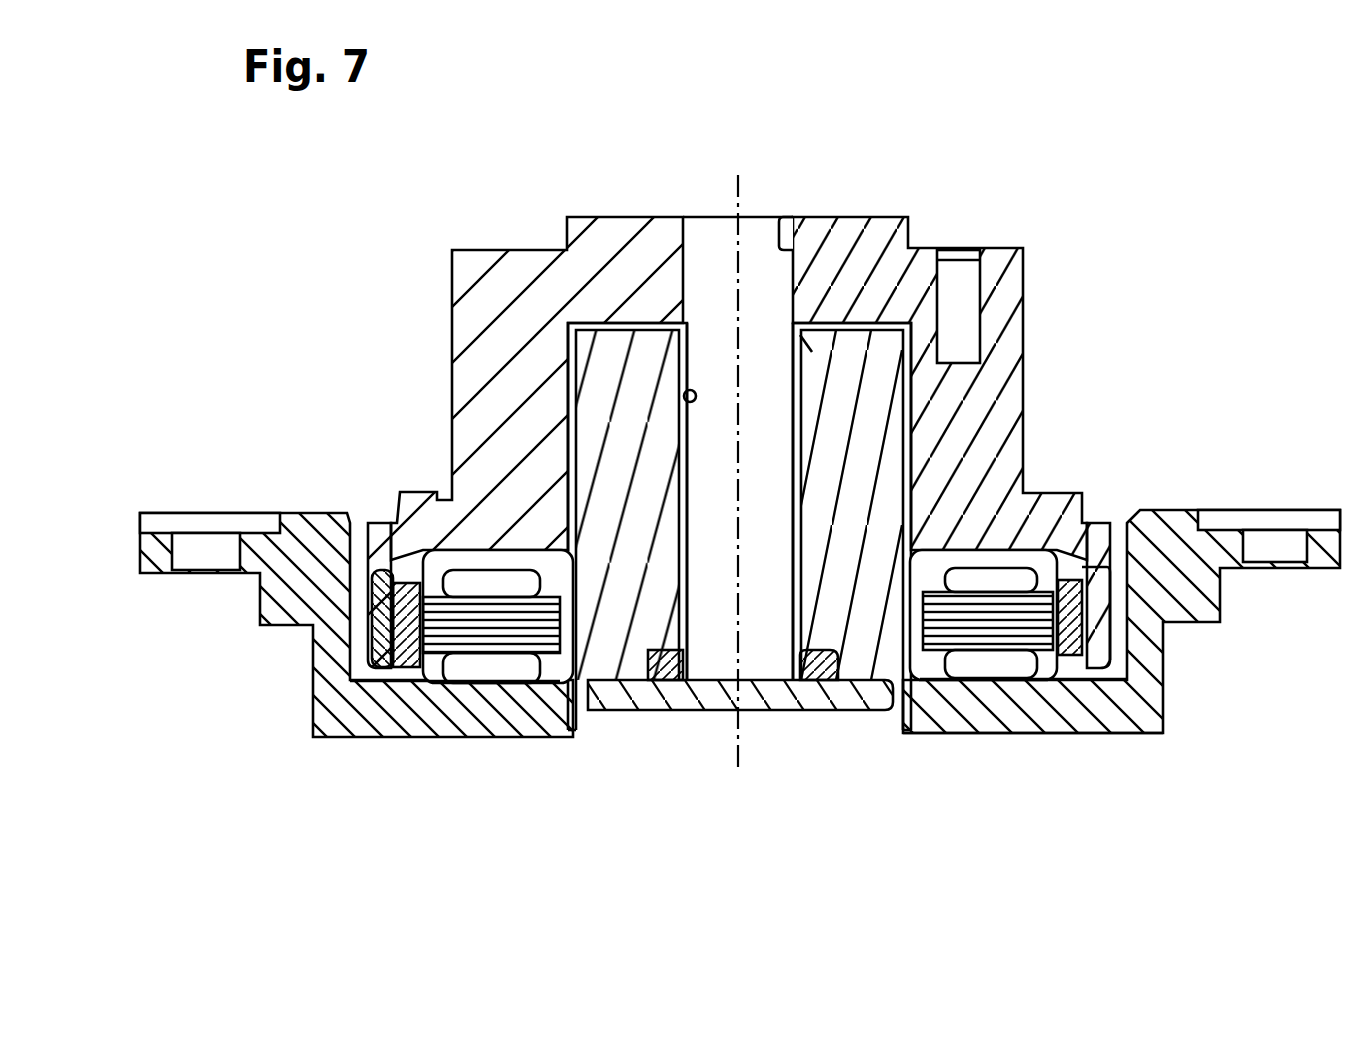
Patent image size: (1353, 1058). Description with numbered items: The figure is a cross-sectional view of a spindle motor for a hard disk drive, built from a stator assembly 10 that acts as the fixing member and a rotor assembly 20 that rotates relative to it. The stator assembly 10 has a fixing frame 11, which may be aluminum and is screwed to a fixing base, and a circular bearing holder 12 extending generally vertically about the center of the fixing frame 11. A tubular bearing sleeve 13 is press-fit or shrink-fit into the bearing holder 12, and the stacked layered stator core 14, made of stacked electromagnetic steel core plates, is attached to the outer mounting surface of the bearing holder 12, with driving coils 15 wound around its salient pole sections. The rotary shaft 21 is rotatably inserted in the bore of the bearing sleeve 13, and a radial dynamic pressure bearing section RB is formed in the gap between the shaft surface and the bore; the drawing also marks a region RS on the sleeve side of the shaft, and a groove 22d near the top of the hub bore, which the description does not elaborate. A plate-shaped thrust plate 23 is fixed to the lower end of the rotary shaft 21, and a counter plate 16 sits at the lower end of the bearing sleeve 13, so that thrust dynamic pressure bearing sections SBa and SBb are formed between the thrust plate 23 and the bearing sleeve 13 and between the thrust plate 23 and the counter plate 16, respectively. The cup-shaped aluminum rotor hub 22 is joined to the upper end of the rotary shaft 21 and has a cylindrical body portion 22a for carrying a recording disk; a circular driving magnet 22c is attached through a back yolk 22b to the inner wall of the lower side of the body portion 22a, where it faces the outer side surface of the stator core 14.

The stator assembly 10 is at (1163, 735).
The fixing frame 11 is at (1047, 718).
The bearing holder 12 is at (912, 657).
The bearing sleeve 13 is at (650, 505).
The stacked layered stator core 14 is at (453, 663).
The driving coils 15 is at (503, 633).
The counter plate 16 is at (771, 710).
The rotor assembly 20 is at (821, 468).
The rotary shaft 21 is at (785, 467).
The rotor hub 22 is at (1022, 438).
The cylindrical body portion 22a is at (1013, 351).
The back yolk 22b is at (1102, 618).
The circular driving magnet 22c is at (1069, 652).
The groove 22d is at (800, 215).
The thrust plate 23 is at (657, 692).
The radial dynamic pressure bearing section RB is at (684, 397).
The rotor sleeve RS is at (805, 344).
The thrust dynamic pressure bearing section SBa is at (838, 652).
The thrust dynamic pressure bearing section SBb is at (800, 690).